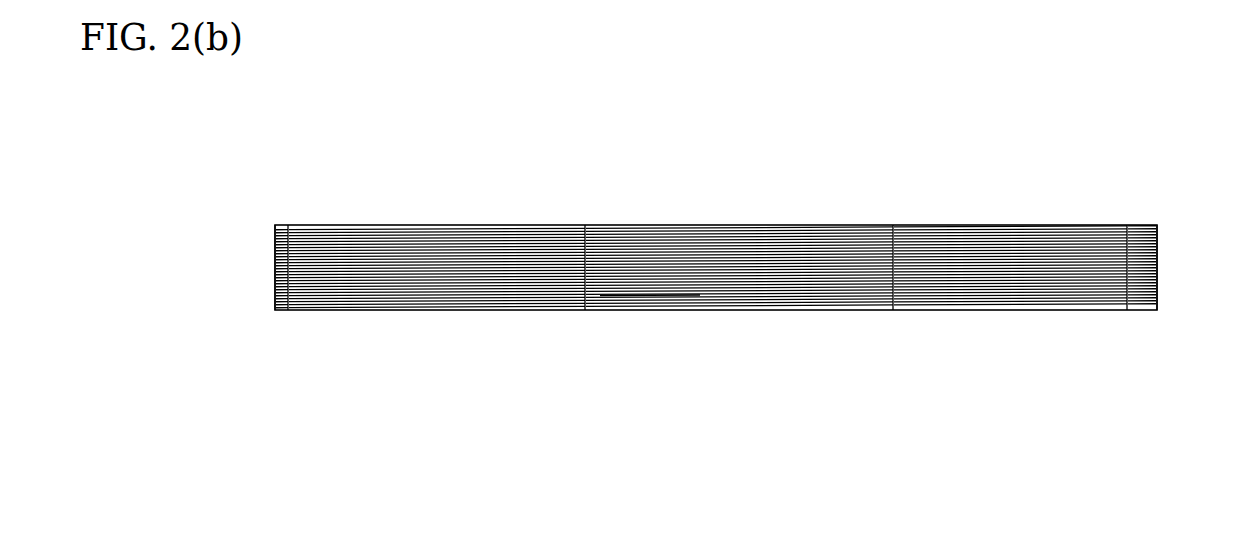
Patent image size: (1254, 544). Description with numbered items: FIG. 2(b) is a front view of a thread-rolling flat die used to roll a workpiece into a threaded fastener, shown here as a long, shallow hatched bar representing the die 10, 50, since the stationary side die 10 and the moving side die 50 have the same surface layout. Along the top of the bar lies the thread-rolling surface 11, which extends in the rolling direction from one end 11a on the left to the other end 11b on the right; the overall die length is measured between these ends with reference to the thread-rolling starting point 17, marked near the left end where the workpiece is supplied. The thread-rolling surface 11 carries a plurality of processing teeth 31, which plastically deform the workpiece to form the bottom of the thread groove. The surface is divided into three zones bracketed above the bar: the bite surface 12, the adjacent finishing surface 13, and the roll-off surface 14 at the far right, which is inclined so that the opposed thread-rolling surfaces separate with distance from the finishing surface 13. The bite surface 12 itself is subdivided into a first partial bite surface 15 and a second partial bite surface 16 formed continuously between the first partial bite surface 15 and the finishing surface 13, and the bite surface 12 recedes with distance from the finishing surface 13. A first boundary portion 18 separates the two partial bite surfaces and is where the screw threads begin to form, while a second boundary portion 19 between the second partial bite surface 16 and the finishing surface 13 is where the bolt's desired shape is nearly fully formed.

The stationary side die 10 is at (1227, 439).
The moving side die 50 is at (723, 262).
The stationary side thread-rolling surface 11 is at (802, 278).
The one end 11a is at (277, 268).
The other end 11b is at (1157, 265).
The bite surface 12 is at (893, 170).
The finishing surface 13 is at (1123, 212).
The roll-off surface 14 is at (1143, 243).
The first partial bite surface 15 is at (583, 218).
The second partial bite surface 16 is at (892, 218).
The thread-rolling starting point 17 is at (298, 312).
The first boundary portion 18 is at (587, 312).
The second boundary portion 19 is at (893, 312).
The processing teeth 31 is at (648, 285).